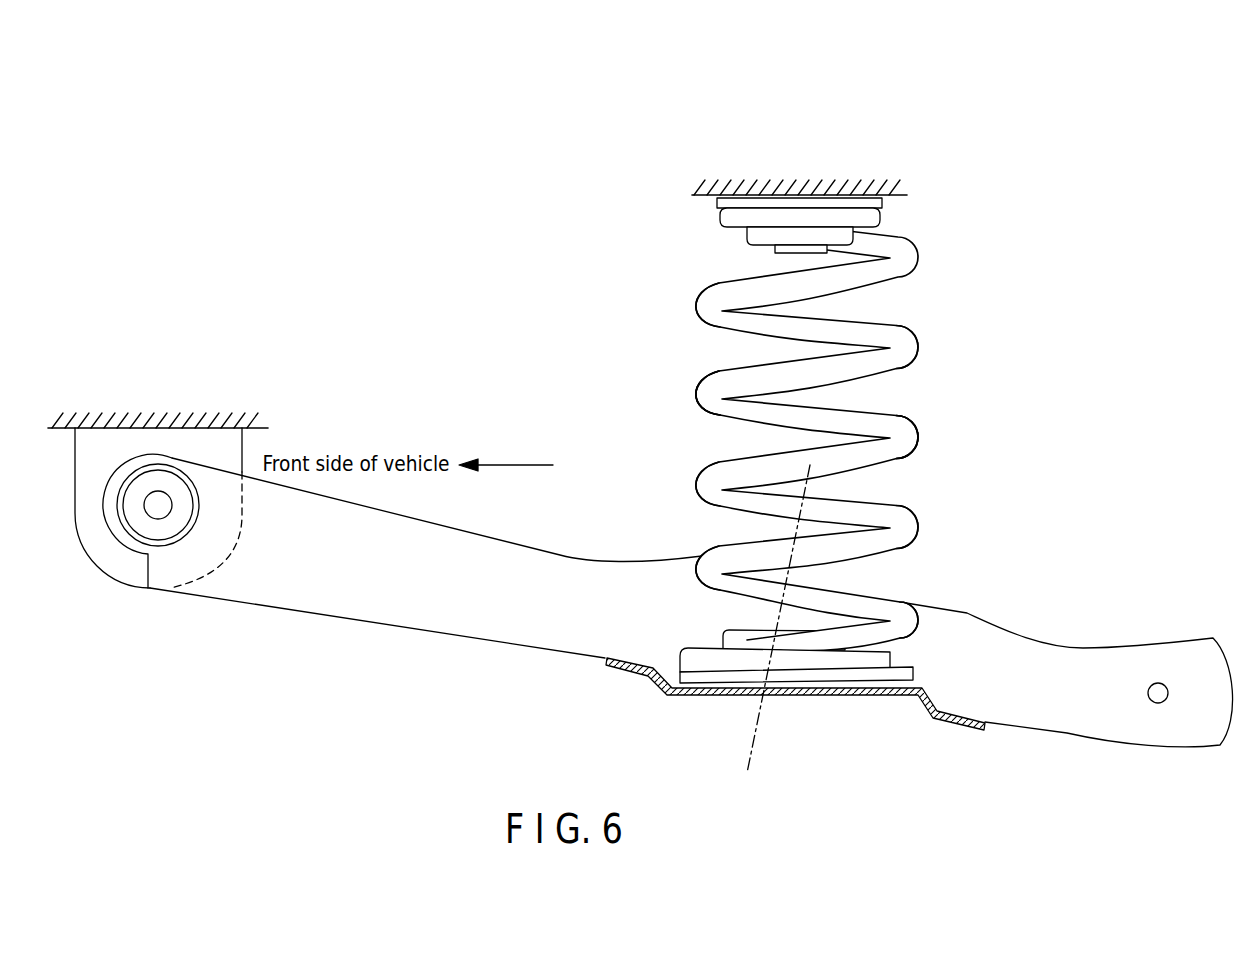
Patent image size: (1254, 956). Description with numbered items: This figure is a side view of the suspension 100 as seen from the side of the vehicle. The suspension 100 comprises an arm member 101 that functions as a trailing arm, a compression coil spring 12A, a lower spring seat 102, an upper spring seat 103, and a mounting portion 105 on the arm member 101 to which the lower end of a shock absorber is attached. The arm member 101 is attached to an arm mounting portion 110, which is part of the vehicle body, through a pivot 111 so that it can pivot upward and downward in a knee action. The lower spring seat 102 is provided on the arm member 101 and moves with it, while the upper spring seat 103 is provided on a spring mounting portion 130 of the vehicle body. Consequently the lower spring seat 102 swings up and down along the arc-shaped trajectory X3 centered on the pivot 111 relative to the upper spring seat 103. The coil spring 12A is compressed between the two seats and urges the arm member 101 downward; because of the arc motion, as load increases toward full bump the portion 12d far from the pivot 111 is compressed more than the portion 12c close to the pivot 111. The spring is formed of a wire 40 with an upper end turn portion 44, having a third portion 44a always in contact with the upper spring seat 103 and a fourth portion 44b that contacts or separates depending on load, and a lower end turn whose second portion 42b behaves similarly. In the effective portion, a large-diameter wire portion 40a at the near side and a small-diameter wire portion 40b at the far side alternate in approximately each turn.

The suspension 100 is at (668, 441).
The arm member 101 is at (485, 642).
The lower spring seat 102 is at (728, 690).
The upper spring seat 103 is at (787, 203).
The mounting portion 105 is at (1158, 704).
The arm mounting portion 110 is at (168, 424).
The pivot 111 is at (162, 510).
The spring mounting portion 130 is at (725, 192).
The coil spring 12A is at (833, 437).
The portion close to the pivot 12c is at (690, 386).
The portion far from the pivot 12d is at (920, 421).
The wire 40 is at (748, 286).
The large-diameter wire portion 40a is at (697, 308).
The small-diameter wire portion 40b is at (919, 347).
The second portion 42b is at (863, 651).
The upper end turn portion 44 is at (837, 173).
The third portion 44a is at (863, 217).
The fourth portion 44b is at (888, 234).
The arc-shaped trajectory X3 is at (776, 715).